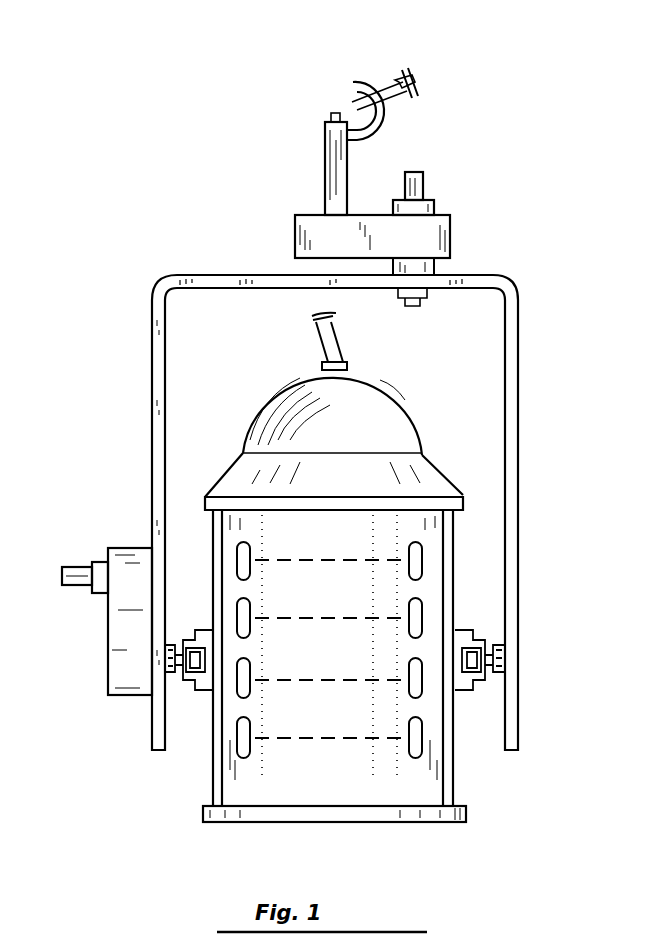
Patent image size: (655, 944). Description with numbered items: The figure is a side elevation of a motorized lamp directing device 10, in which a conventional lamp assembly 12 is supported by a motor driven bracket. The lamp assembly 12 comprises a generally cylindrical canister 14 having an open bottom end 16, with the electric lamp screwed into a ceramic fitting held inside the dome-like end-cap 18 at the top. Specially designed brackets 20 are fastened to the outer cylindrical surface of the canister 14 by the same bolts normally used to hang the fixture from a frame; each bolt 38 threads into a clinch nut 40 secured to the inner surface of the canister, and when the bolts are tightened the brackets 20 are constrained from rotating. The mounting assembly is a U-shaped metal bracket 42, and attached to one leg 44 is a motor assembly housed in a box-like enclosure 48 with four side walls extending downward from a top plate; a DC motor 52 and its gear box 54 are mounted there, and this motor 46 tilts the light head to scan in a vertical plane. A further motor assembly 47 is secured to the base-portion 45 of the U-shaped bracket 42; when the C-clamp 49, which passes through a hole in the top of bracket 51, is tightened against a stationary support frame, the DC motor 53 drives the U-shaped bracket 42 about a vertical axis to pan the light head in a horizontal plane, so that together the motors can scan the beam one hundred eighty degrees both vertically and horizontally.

The motorized lamp directing device 10 is at (530, 257).
The lamp assembly 12 is at (275, 370).
The cylindrical canister 14 is at (342, 792).
The open bottom end 16 is at (248, 822).
The dome-like end-cap 18 is at (382, 410).
The bracket 20 is at (200, 630).
The bolt 38 is at (467, 672).
The clinch nut 40 is at (225, 655).
The U-shaped metal bracket 42 is at (518, 357).
The leg 44 is at (152, 735).
The base-portion 45 is at (232, 273).
The motor 46 is at (122, 546).
The motor assembly 47 is at (453, 212).
The box-like enclosure 48 is at (127, 675).
The C-clamp 49 is at (357, 88).
The bracket 51 is at (330, 160).
The DC motor 52 is at (79, 586).
The DC motor 53 is at (420, 180).
The gear box 54 is at (100, 565).